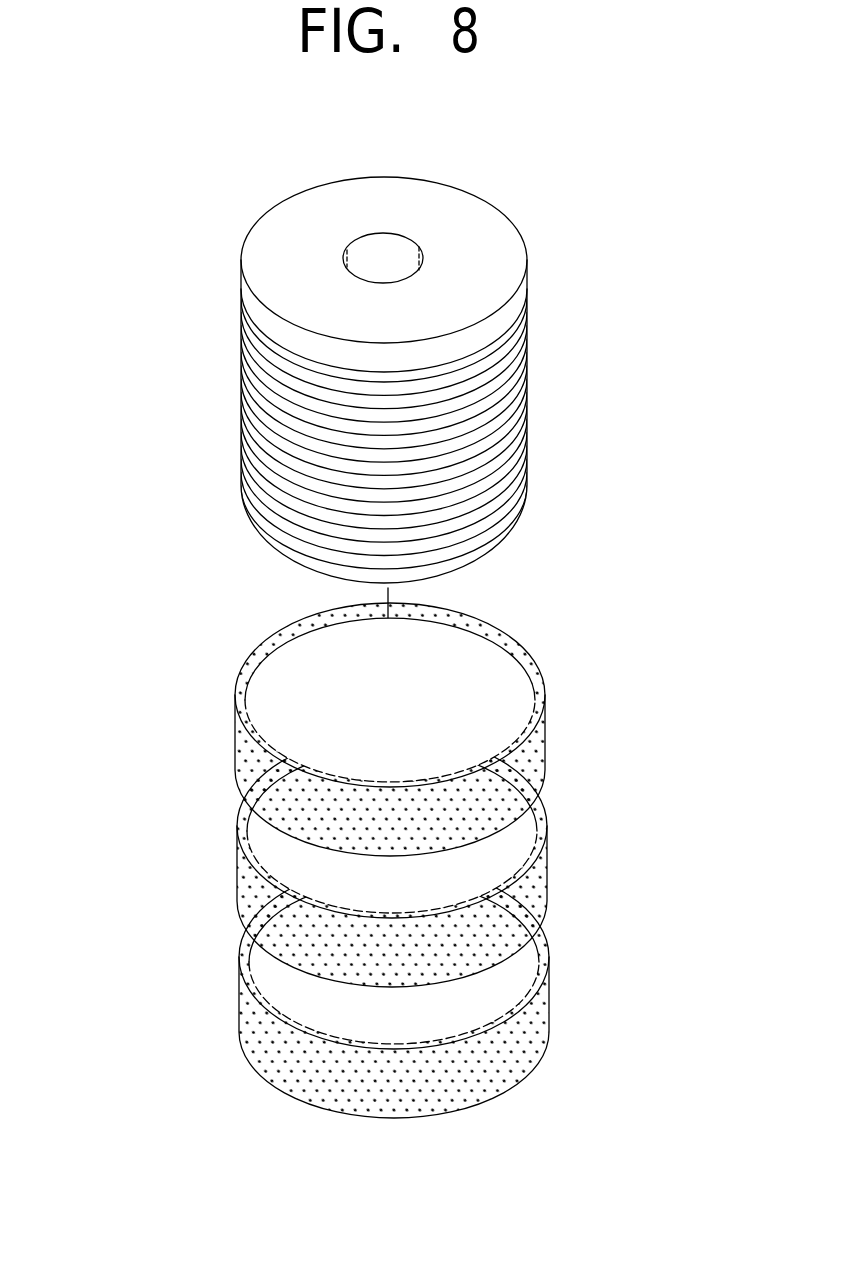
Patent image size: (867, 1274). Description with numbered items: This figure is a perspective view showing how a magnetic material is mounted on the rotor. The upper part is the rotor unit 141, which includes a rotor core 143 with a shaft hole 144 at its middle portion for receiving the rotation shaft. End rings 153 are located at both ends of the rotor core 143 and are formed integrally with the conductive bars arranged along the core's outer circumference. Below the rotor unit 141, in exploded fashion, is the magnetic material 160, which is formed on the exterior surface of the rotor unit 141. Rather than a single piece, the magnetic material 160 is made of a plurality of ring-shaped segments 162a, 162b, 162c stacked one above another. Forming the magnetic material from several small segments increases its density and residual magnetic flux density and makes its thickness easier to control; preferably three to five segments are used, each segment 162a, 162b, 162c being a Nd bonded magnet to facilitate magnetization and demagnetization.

The rotor unit 141 is at (356, 374).
The rotor core 143 is at (508, 387).
The shaft hole 144 is at (398, 256).
The end rings 153 is at (478, 268).
The magnetic material 160 is at (489, 860).
The segment 162a is at (450, 729).
The segment 162b is at (539, 885).
The segment 162c is at (541, 1016).